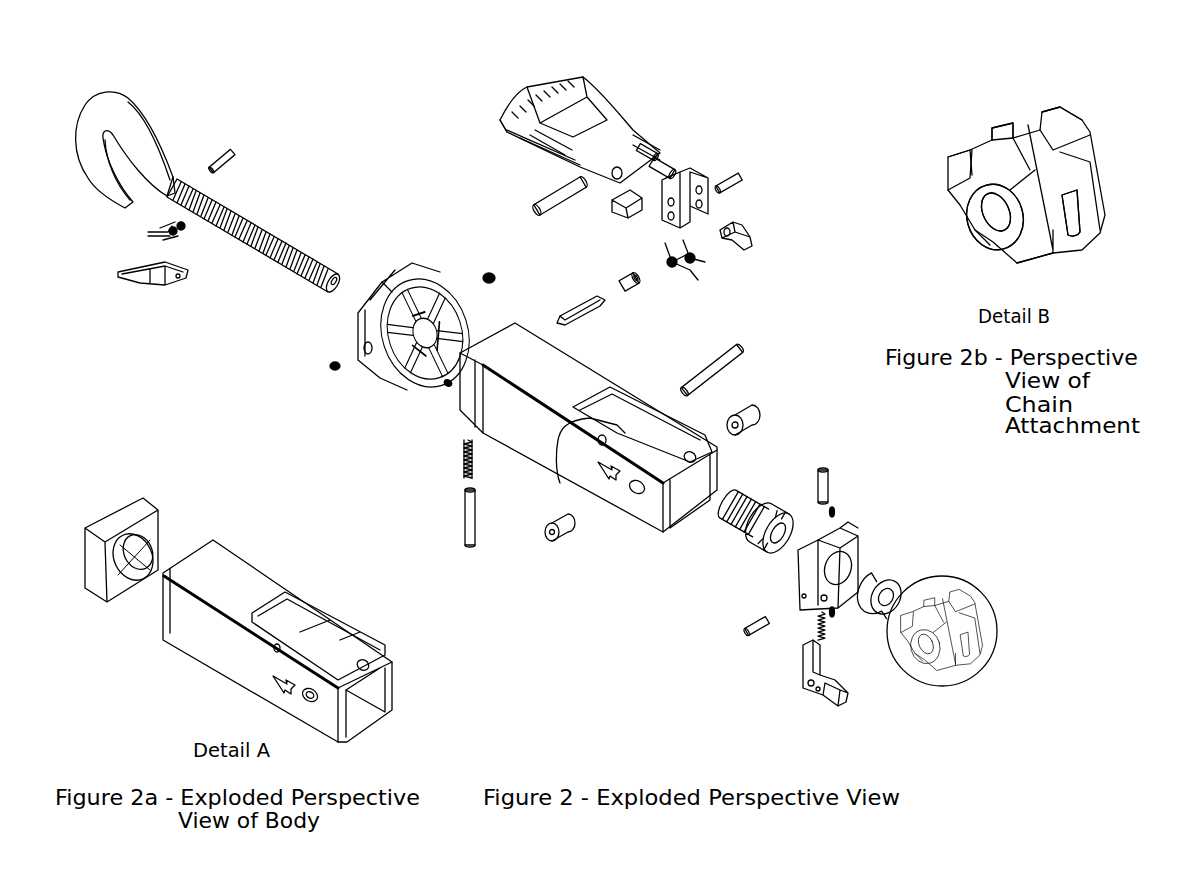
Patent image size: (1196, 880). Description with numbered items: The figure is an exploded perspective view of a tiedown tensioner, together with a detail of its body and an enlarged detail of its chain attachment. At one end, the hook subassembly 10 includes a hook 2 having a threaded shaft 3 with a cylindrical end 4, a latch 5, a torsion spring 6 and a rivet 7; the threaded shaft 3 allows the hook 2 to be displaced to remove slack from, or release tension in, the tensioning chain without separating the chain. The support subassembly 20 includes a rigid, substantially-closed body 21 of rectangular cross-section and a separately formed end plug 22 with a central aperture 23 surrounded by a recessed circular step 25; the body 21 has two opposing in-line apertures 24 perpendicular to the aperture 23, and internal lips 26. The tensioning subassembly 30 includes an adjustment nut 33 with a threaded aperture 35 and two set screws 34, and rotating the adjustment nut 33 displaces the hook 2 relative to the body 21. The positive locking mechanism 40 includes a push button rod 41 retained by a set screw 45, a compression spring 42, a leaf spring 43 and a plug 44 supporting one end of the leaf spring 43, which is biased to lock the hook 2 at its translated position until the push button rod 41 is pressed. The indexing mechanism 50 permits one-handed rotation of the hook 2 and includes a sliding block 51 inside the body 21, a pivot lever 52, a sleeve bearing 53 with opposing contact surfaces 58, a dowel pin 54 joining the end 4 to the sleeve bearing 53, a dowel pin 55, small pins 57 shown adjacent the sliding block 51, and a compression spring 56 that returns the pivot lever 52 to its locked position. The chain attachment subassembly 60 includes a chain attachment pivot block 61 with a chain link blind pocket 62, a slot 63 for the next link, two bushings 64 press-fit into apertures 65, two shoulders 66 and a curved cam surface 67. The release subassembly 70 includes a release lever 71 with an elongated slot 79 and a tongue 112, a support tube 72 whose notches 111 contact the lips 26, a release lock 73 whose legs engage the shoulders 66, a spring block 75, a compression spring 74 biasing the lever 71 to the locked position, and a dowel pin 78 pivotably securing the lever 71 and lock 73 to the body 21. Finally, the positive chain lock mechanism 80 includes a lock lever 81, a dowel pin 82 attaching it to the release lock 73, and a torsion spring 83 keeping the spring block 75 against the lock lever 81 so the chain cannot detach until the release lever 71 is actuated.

In FIG. 2, the hook subassembly 10 is at (65, 80).
In FIG. 2, the hook 2 is at (122, 126).
In FIG. 2, the threaded shaft 3 is at (262, 225).
In FIG. 2, the cylindrical end 4 is at (333, 286).
In FIG. 2, the latch 5 is at (120, 273).
In FIG. 2, the torsion spring 6 is at (140, 233).
In FIG. 2, the rivet 7 is at (226, 158).
In FIG. 2, the support subassembly 20 is at (422, 588).
In FIG. 2, the body 21 is at (576, 383).
In FIG. 2A, the body 21 is at (249, 550).
In FIG. 2, the end plug 22 is at (520, 332).
In FIG. 2A, the end plug 22 is at (152, 495).
In FIG. 2A, the central aperture 23 is at (132, 558).
In FIG. 2A, the in-line apertures 24 is at (308, 695).
In FIG. 2A, the recessed circular step 25 is at (148, 555).
In FIG. 2, the lips 26 is at (612, 412).
In FIG. 2, the tensioning subassembly 30 is at (345, 232).
In FIG. 2, the adjustment nut 33 is at (407, 283).
In FIG. 2, the set screws 34 is at (487, 275).
In FIG. 2, the threaded aperture 35 is at (395, 380).
In FIG. 2, the positive locking mechanism 40 is at (385, 452).
In FIG. 2, the push button rod 41 is at (468, 498).
In FIG. 2, the compression spring 42 is at (465, 460).
In FIG. 2, the leaf spring 43 is at (560, 315).
In FIG. 2, the plug 44 is at (640, 285).
In FIG. 2, the set screw 45 is at (448, 386).
In FIG. 2, the indexing mechanism 50 is at (722, 688).
In FIG. 2, the sliding block 51 is at (862, 565).
In FIG. 2, the pivot lever 52 is at (815, 695).
In FIG. 2, the sleeve bearing 53 is at (877, 610).
In FIG. 2, the dowel pin 54 is at (833, 490).
In FIG. 2, the dowel pin 55 is at (752, 632).
In FIG. 2, the compression spring 56 is at (820, 620).
In FIG. 2, the pin 57 is at (840, 511).
In FIG. 2, the contact surfaces 58 is at (870, 576).
In FIG. 2, the chain attachment subassembly 60 is at (997, 573).
In FIG. 2B, the chain attachment subassembly 60 is at (947, 80).
In FIG. 2B, the chain attachment pivot block 61 is at (1035, 240).
In FIG. 2B, the chain link blind pocket 62 is at (1027, 117).
In FIG. 2B, the slot 63 is at (1073, 228).
In FIG. 2, the bushings 64 is at (558, 530).
In FIG. 2B, the apertures 65 is at (990, 213).
In FIG. 2B, the shoulders 66 is at (965, 155).
In FIG. 2B, the curved cam surface 67 is at (1022, 262).
In FIG. 2, the release subassembly 70 is at (462, 80).
In FIG. 2, the release lever 71 is at (556, 97).
In FIG. 2, the support tube 72 is at (550, 189).
In FIG. 2, the release lock 73 is at (698, 182).
In FIG. 2, the compression spring 74 is at (668, 172).
In FIG. 2, the spring block 75 is at (615, 208).
In FIG. 2, the dowel pin 78 is at (744, 353).
In FIG. 2, the elongated slot 79 is at (555, 166).
In FIG. 2, the positive chain lock mechanism 80 is at (807, 127).
In FIG. 2, the lock lever 81 is at (748, 237).
In FIG. 2, the dowel pin 82 is at (740, 182).
In FIG. 2, the torsion spring 83 is at (700, 278).
In FIG. 2, the notches 111 is at (537, 207).
In FIG. 2, the tongue 112 is at (655, 168).